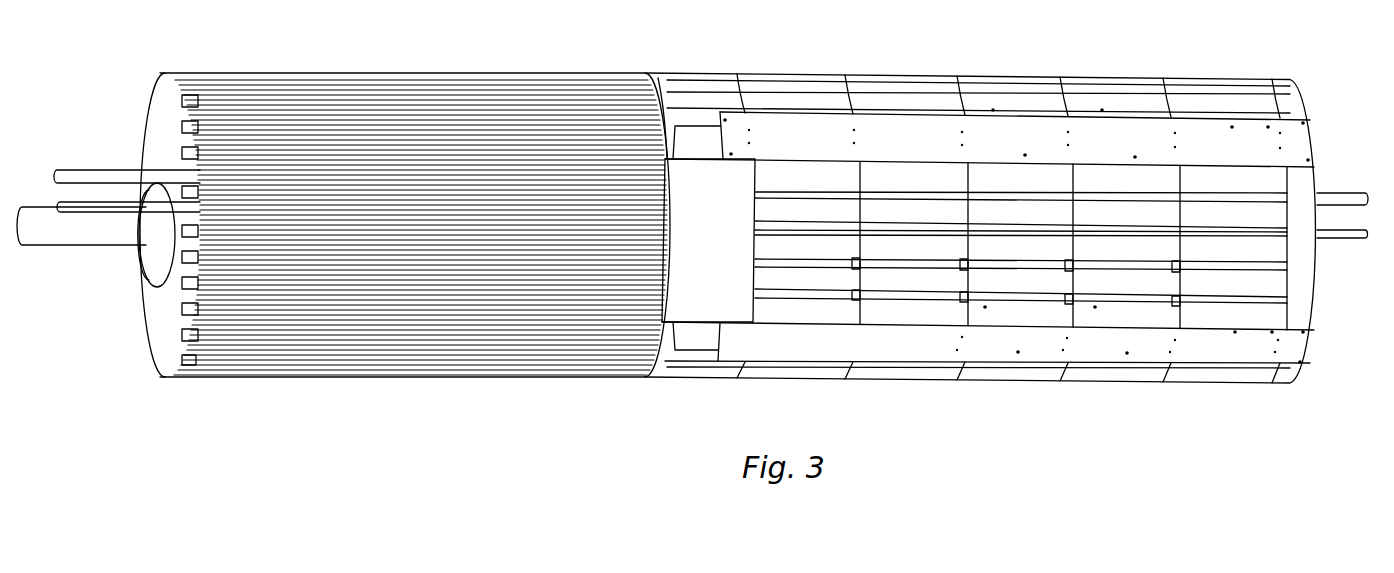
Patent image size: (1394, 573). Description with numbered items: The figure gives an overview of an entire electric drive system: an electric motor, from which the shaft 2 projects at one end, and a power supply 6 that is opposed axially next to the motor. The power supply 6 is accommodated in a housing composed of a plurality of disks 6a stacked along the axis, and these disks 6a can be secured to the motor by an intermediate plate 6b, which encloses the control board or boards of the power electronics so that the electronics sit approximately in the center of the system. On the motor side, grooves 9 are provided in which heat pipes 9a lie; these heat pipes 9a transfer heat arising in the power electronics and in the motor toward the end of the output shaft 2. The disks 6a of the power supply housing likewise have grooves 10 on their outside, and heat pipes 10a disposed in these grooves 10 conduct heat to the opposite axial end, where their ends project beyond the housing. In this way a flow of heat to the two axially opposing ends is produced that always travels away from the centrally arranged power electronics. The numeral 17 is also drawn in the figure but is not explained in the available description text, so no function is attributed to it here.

The shaft 2 is at (85, 233).
The power supply 6 is at (1003, 66).
The disks 6a is at (1021, 245).
The intermediate plate 6b is at (708, 240).
The lamination stack 17 is at (373, 62).
The grooves 9 is at (189, 146).
The heat pipes 9a is at (107, 176).
The grooves 10 is at (1263, 238).
The heat pipes 10a is at (1350, 198).